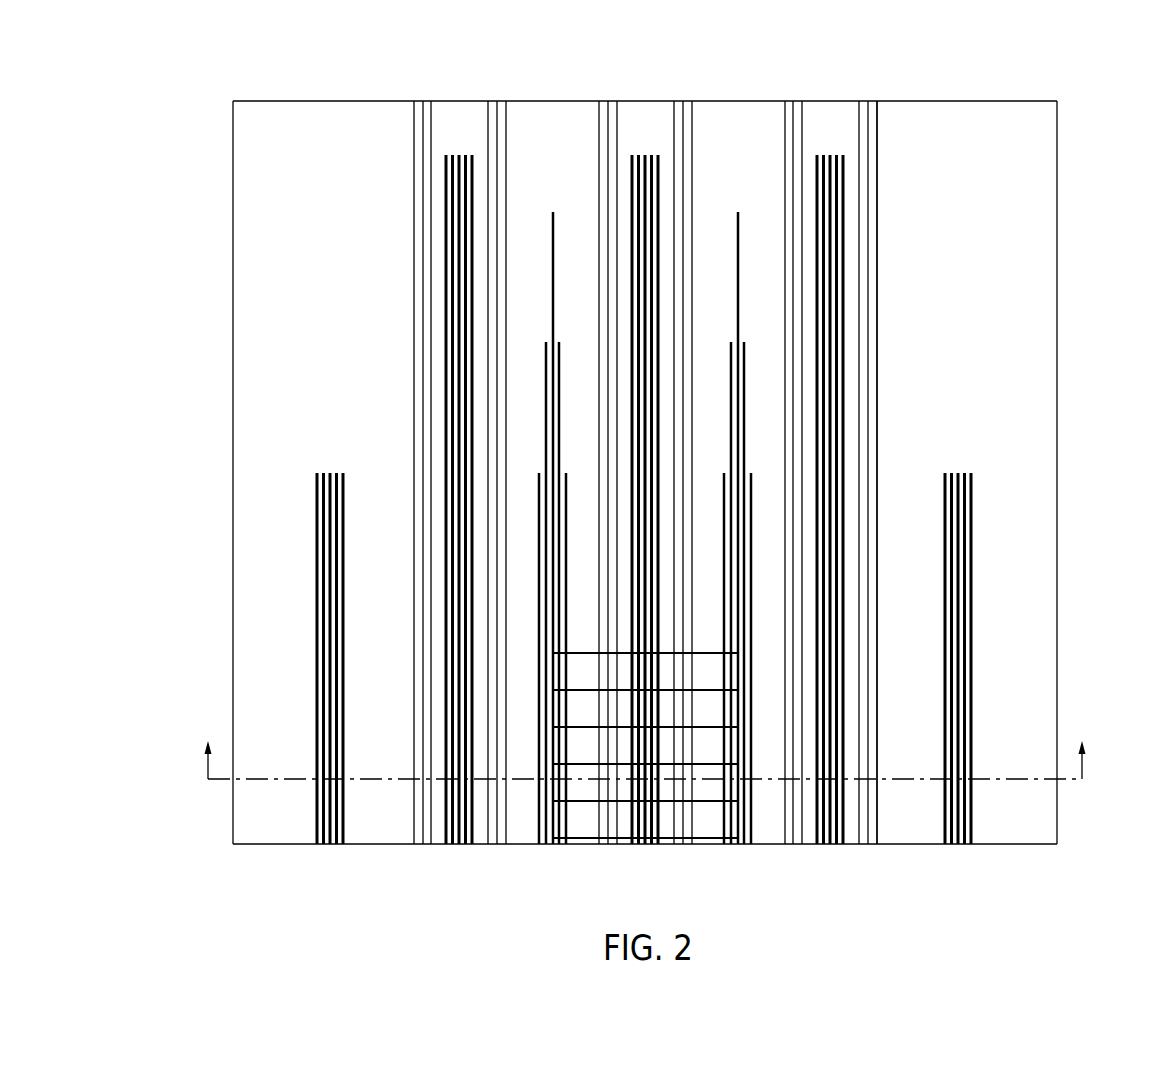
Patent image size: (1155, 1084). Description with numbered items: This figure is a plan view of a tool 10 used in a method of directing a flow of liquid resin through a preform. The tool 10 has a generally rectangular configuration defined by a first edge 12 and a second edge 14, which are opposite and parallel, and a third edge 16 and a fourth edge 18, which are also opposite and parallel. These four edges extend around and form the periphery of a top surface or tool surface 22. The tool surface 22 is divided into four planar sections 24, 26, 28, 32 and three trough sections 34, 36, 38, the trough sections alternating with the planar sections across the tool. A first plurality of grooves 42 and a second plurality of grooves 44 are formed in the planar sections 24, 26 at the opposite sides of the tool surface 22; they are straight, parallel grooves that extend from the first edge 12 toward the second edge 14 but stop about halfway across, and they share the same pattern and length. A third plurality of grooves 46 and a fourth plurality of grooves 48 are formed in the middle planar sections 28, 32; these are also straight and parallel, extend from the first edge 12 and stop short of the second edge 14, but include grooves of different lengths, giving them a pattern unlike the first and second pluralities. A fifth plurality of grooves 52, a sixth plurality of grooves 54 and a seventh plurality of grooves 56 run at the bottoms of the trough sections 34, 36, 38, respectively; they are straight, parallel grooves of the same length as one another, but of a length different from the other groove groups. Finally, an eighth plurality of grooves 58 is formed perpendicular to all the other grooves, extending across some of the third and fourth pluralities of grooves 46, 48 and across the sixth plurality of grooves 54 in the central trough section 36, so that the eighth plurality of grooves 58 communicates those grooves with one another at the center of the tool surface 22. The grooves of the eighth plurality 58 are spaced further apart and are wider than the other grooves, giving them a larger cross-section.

The tool 10 is at (1072, 86).
The first edge 12 is at (377, 845).
The second edge 14 is at (340, 101).
The third edge 16 is at (233, 325).
The fourth edge 18 is at (1057, 333).
The tool surface 22 is at (1026, 270).
The first planar section 24 is at (272, 175).
The second planar section 26 is at (944, 116).
The third planar section 28 is at (550, 128).
The fourth planar section 32 is at (735, 128).
The first trough section 34 is at (460, 116).
The second trough section 36 is at (647, 116).
The third trough section 38 is at (828, 116).
The first plurality of grooves 42 is at (332, 858).
The second plurality of grooves 44 is at (963, 858).
The third plurality of grooves 46 is at (553, 858).
The fourth plurality of grooves 48 is at (738, 858).
The fifth plurality of grooves 52 is at (460, 858).
The sixth plurality of grooves 54 is at (645, 858).
The seventh plurality of grooves 56 is at (833, 858).
The eighth plurality of grooves 58 is at (596, 858).